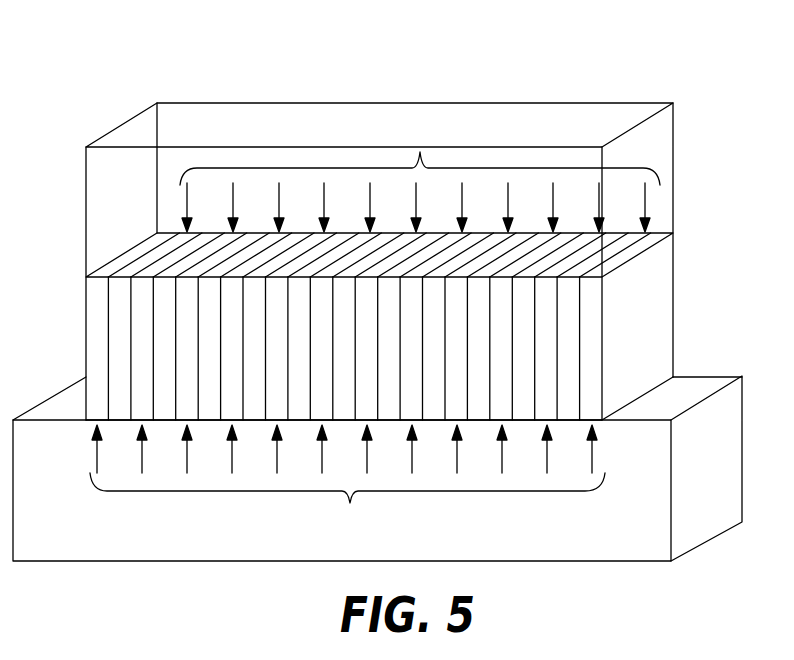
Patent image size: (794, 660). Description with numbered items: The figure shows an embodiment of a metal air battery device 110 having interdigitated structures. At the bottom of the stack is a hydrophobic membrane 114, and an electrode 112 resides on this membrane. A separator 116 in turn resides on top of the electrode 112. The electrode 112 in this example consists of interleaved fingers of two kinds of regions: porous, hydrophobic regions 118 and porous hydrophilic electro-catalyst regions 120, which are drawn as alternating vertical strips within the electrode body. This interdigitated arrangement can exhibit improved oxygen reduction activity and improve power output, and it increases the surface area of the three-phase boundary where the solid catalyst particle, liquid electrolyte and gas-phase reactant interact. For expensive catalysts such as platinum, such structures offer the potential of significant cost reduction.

The device 110 is at (580, 72).
The electrode 112 is at (674, 305).
The hydrophobic membrane 114 is at (742, 442).
The separator 116 is at (675, 170).
The porous hydrophobic regions 118 is at (347, 481).
The porous hydrophilic electro-catalyst regions 120 is at (420, 150).